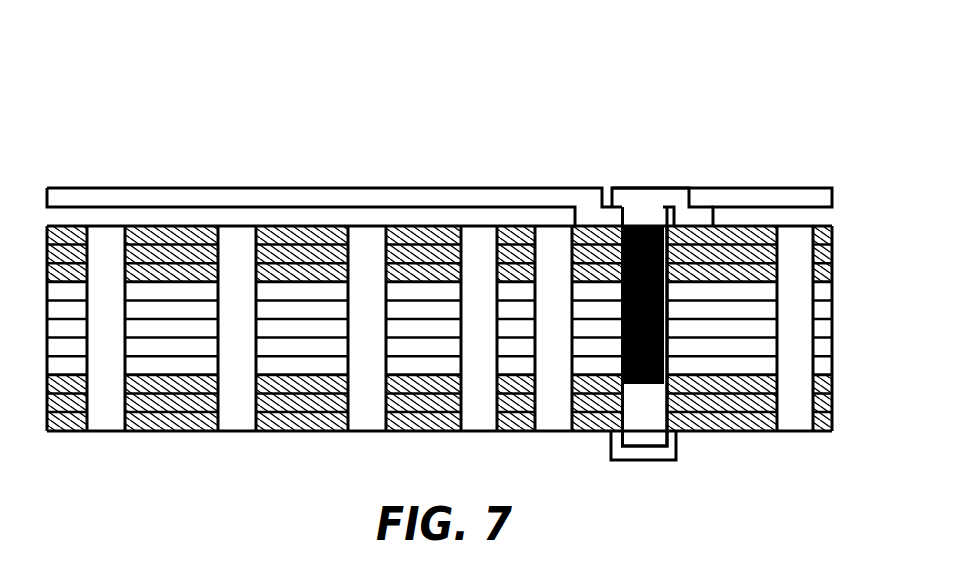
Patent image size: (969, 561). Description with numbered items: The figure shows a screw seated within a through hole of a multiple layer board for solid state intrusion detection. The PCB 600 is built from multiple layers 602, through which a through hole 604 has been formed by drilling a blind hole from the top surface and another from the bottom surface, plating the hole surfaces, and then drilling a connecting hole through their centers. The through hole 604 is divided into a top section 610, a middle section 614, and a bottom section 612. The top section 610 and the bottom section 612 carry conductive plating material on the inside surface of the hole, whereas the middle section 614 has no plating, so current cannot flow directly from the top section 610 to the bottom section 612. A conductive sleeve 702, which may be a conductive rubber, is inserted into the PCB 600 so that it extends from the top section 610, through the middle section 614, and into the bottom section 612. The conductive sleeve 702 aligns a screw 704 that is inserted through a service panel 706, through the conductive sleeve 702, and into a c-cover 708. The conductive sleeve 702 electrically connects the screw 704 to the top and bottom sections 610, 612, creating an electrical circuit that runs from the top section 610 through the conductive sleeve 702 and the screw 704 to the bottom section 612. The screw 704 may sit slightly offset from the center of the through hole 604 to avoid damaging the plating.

The PCB 600 is at (491, 274).
The multiple layers 602 is at (832, 277).
The through hole 604 is at (675, 295).
The top section 610 is at (687, 225).
The bottom section 612 is at (677, 433).
The middle section 614 is at (652, 348).
The conductive sleeve 702 is at (647, 225).
The screw 704 is at (648, 198).
The service panel 706 is at (547, 198).
The c-cover 708 is at (618, 450).